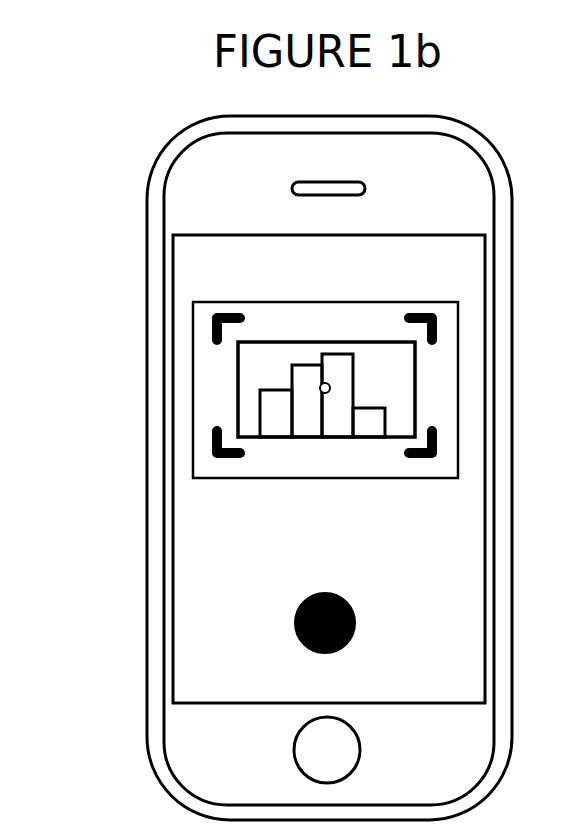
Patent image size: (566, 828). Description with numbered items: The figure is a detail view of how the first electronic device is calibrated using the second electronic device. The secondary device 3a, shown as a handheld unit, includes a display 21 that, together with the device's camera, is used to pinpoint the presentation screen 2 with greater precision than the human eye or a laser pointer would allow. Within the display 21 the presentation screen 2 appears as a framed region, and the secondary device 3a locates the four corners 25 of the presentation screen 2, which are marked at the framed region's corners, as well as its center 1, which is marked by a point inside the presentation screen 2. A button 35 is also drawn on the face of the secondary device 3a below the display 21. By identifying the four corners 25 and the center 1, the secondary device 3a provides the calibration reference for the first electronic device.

The secondary device 3a is at (146, 220).
The display 21 is at (193, 408).
The presentation screen 2 is at (238, 381).
The center 1 is at (331, 388).
The four corners 25 is at (418, 318).
The capture button 35 is at (297, 635).